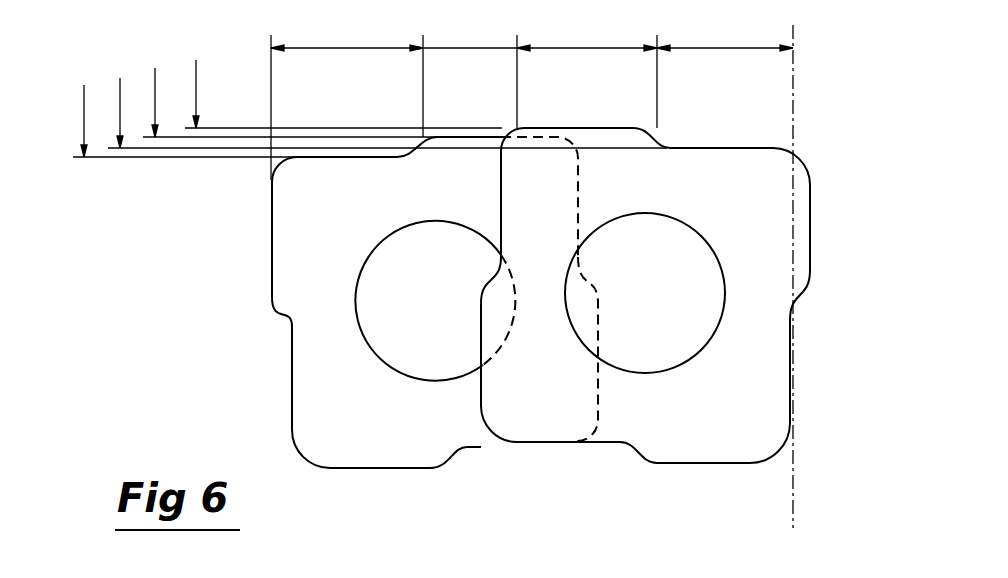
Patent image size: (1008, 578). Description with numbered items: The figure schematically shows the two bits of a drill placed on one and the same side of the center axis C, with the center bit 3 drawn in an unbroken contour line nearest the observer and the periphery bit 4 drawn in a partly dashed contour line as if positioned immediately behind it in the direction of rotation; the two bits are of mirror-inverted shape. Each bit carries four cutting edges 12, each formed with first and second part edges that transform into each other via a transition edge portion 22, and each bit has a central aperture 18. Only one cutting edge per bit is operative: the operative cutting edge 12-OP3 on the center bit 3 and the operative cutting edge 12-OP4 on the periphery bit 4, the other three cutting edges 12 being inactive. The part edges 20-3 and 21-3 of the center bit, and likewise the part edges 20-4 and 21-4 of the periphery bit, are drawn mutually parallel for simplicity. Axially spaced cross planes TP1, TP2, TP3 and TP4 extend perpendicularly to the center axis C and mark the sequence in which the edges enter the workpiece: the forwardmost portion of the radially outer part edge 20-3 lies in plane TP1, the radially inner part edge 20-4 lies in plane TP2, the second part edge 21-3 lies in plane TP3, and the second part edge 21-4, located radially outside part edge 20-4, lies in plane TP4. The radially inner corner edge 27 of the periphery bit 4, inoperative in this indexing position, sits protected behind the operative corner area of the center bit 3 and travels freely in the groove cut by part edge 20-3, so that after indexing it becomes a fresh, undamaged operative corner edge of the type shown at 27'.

The center bit 3 is at (697, 480).
The periphery bit 4 is at (388, 479).
The cutting edge 12 is at (500, 216).
The operative cutting edge of the center bit 12-OP3 is at (665, 143).
The operative cutting edge of the periphery bit 12-OP4 is at (398, 153).
The circular aperture 18 is at (687, 347).
The first, radially outer part edge of the center bit 20-3 is at (578, 124).
The first, radially inner part edge of the periphery bit 20-4 is at (468, 135).
The second part edge of the center bit 21-3 is at (740, 150).
The second part edge of the periphery bit 21-4 is at (347, 160).
The transition edge portion 22 is at (648, 150).
The radially inner corner edge 27 is at (539, 197).
The operative corner edge 27' is at (262, 210).
The center axis C is at (795, 482).
The first cross plane TP1 is at (343, 79).
The second cross plane TP2 is at (290, 91).
The third cross plane TP3 is at (383, 102).
The fourth cross plane TP4 is at (174, 113).